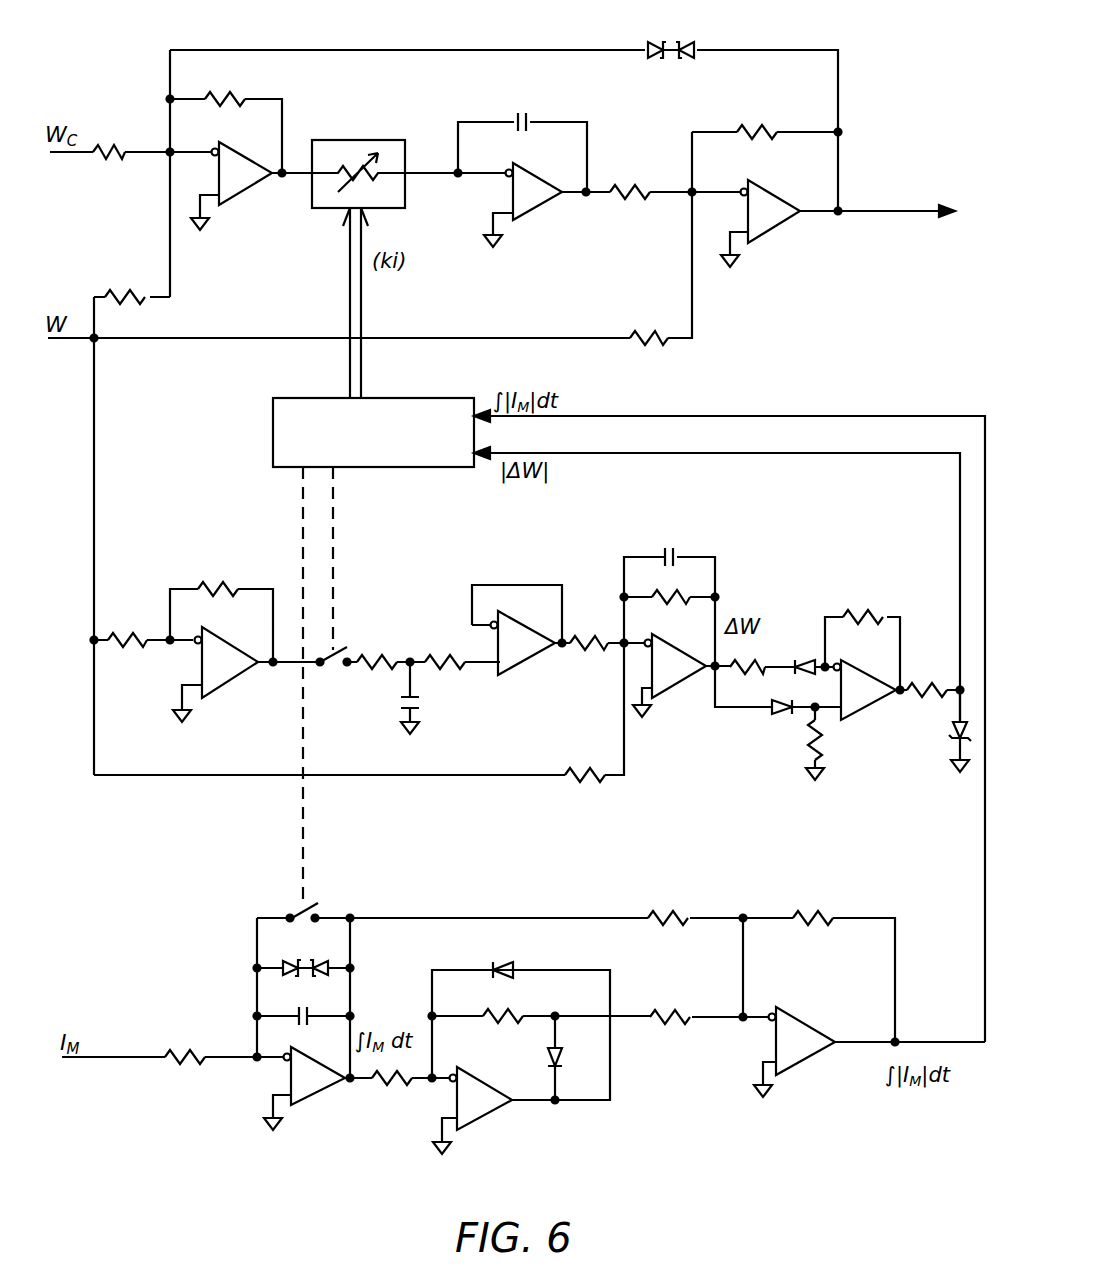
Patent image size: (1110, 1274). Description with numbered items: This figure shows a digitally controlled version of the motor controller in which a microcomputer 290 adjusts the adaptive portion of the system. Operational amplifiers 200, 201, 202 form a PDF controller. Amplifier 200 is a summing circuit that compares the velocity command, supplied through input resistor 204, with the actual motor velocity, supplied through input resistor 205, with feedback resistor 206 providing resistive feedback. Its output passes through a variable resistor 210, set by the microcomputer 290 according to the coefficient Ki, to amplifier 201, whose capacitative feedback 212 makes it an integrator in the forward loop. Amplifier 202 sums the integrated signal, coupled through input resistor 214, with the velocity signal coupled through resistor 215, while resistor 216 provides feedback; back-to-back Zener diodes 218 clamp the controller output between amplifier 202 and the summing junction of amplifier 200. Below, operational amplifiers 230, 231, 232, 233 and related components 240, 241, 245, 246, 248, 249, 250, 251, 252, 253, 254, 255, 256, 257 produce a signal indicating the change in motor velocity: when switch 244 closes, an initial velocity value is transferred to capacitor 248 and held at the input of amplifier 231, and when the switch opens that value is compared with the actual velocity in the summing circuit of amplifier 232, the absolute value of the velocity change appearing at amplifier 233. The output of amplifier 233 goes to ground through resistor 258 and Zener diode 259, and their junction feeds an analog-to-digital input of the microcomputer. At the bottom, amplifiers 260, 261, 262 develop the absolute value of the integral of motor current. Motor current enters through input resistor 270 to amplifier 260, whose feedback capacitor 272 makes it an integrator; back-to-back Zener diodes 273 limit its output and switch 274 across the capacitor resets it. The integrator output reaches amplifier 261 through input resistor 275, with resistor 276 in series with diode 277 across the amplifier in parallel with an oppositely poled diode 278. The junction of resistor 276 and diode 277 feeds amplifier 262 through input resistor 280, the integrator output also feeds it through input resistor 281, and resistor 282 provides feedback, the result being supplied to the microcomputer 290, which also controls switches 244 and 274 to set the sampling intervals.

The operational amplifier 200 is at (246, 204).
The operational amplifier 201 is at (542, 218).
The operational amplifier 202 is at (765, 234).
The input resistor 204 is at (126, 165).
The input resistor 205 is at (149, 297).
The feedback resistor 206 is at (225, 98).
The variable resistor 210 is at (401, 140).
The capacitative feedback 212 is at (525, 112).
The input resistor 214 is at (644, 186).
The resistor 215 is at (656, 332).
The resistor 216 is at (763, 128).
The back-to-back Zener diodes 218 is at (684, 38).
The operational amplifier 230 is at (237, 685).
The operational amplifier 231 is at (519, 674).
The operational amplifier 232 is at (680, 700).
The operational amplifier 233 is at (873, 674).
The resistor 240 is at (136, 648).
The resistor 241 is at (234, 586).
The switch 244 is at (333, 674).
The resistor 245 is at (370, 656).
The resistor 246 is at (450, 662).
The capacitor 248 is at (425, 710).
The resistor 249 is at (592, 771).
The resistor 250 is at (604, 640).
The resistor 251 is at (659, 610).
The capacitor 252 is at (669, 551).
The resistor 253 is at (765, 680).
The diode 254 is at (808, 656).
The diode 255 is at (779, 722).
The resistor 256 is at (824, 750).
The resistor 257 is at (892, 594).
The resistor 258 is at (940, 706).
The Zener diode 259 is at (949, 732).
The operational amplifier 260 is at (310, 1098).
The operational amplifier 261 is at (485, 1124).
The operational amplifier 262 is at (815, 1012).
The input resistor 270 is at (200, 1064).
The capacitor 272 is at (298, 1009).
The back-to-back Zener diodes 273 is at (305, 949).
The switch 274 is at (318, 903).
The input resistor 275 is at (388, 1084).
The resistor 276 is at (506, 1016).
The diode 277 is at (546, 1056).
The diode 278 is at (512, 967).
The input resistor 280 is at (676, 1009).
The input resistor 281 is at (690, 897).
The resistor 282 is at (825, 897).
The microcomputer 290 is at (273, 418).